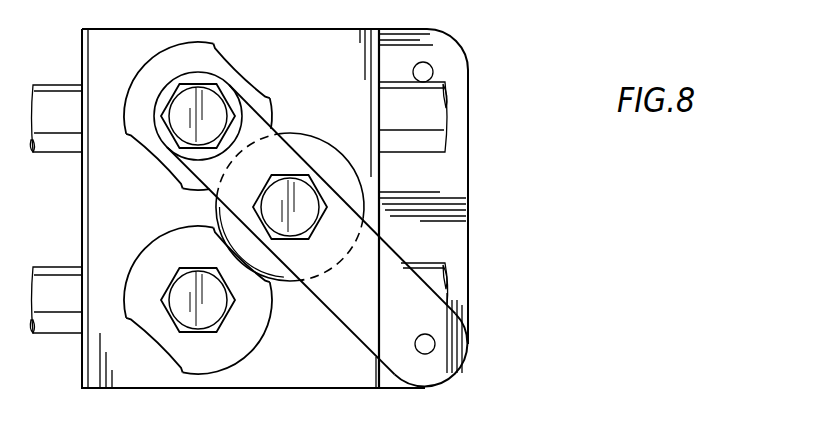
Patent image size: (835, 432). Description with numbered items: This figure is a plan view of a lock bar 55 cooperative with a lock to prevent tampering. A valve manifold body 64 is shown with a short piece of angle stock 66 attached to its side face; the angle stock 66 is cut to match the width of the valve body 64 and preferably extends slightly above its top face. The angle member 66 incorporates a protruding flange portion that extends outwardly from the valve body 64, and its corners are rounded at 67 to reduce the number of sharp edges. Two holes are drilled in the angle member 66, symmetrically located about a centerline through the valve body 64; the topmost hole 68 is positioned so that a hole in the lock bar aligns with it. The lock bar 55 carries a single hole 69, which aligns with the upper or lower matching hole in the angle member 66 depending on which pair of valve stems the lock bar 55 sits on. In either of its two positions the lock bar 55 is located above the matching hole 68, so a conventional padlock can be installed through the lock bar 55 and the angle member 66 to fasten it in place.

The lock bar 55 is at (400, 254).
The valve manifold body 64 is at (328, 363).
The angle stock 66 is at (462, 150).
The rounded corners 67 is at (462, 75).
The topmost hole 68 is at (431, 66).
The hole 69 is at (436, 344).